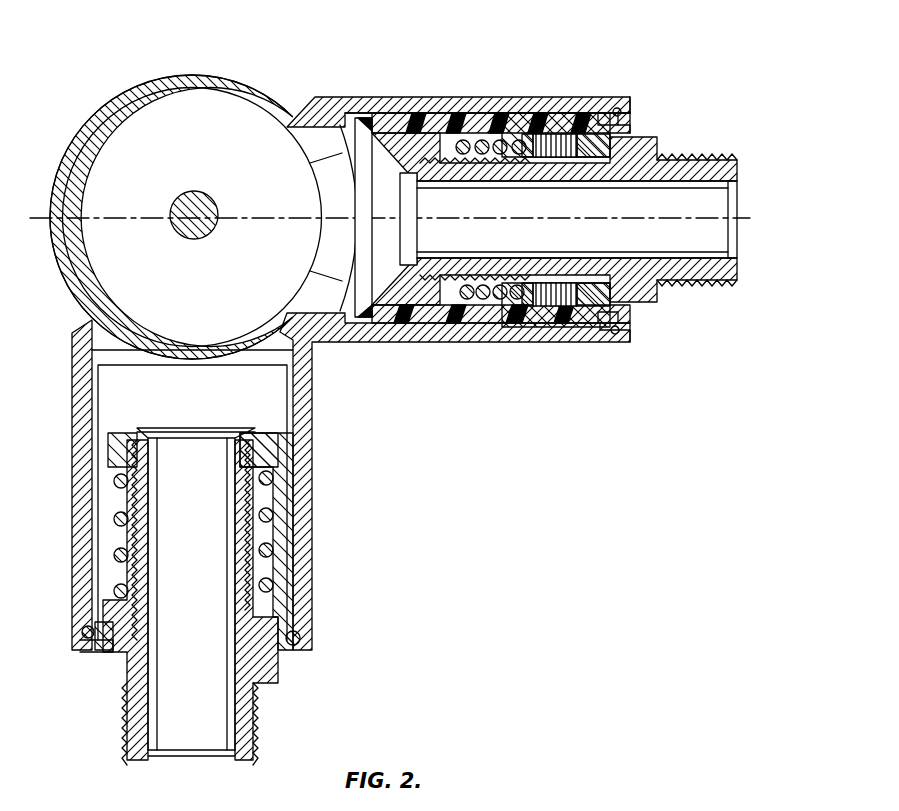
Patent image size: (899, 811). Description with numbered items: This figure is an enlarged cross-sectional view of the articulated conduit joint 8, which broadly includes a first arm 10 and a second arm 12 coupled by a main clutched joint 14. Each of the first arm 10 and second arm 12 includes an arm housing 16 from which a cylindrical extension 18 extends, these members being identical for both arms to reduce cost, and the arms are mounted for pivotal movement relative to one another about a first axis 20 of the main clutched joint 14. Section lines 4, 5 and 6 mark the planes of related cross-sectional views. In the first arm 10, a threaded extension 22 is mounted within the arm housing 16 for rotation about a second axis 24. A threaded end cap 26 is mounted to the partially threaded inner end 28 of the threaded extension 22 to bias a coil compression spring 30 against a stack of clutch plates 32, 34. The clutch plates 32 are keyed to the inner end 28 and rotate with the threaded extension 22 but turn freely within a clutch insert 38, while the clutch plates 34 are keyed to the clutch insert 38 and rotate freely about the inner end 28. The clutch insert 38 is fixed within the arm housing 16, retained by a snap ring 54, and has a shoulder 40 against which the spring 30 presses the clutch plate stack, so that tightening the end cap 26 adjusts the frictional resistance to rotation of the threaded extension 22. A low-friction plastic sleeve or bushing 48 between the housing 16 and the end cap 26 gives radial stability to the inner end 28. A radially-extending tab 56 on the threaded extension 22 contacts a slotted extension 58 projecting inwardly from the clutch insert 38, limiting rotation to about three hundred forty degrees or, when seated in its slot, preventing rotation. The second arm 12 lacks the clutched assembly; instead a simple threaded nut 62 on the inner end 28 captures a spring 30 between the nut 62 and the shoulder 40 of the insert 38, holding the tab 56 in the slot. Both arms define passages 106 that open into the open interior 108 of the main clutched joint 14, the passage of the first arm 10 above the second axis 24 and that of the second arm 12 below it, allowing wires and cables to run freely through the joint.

The section line 4- 4 is at (605, 62).
The section line 5- 5 is at (556, 52).
The section line 6- 6 is at (835, 130).
The joint 8 is at (822, 80).
The first arm 10 is at (686, 58).
The second arm 12 is at (58, 682).
The main clutched joint 14 is at (262, 60).
The arm housing 16 is at (376, 96).
The cylindrical extension 18 is at (96, 116).
The first axis 20 is at (186, 236).
The threaded extension 22 is at (690, 290).
The second axis 24 is at (745, 222).
The threaded end cap 26 is at (440, 123).
The partially threaded inner end 28 is at (445, 268).
The coil compression spring 30 is at (482, 300).
The clutch plates 32 is at (560, 308).
The clutch plates 34 is at (568, 315).
The clutch insert 38 is at (524, 302).
The shoulder 40 is at (590, 152).
The plastic sleeve or bushing 48 is at (386, 314).
The snap ring 54 is at (620, 110).
The radially-extending tab 56 is at (604, 292).
The slotted extension 58 is at (103, 650).
The threaded nut 62 is at (278, 452).
The passages 106 is at (591, 211).
The open interior 108 is at (278, 266).